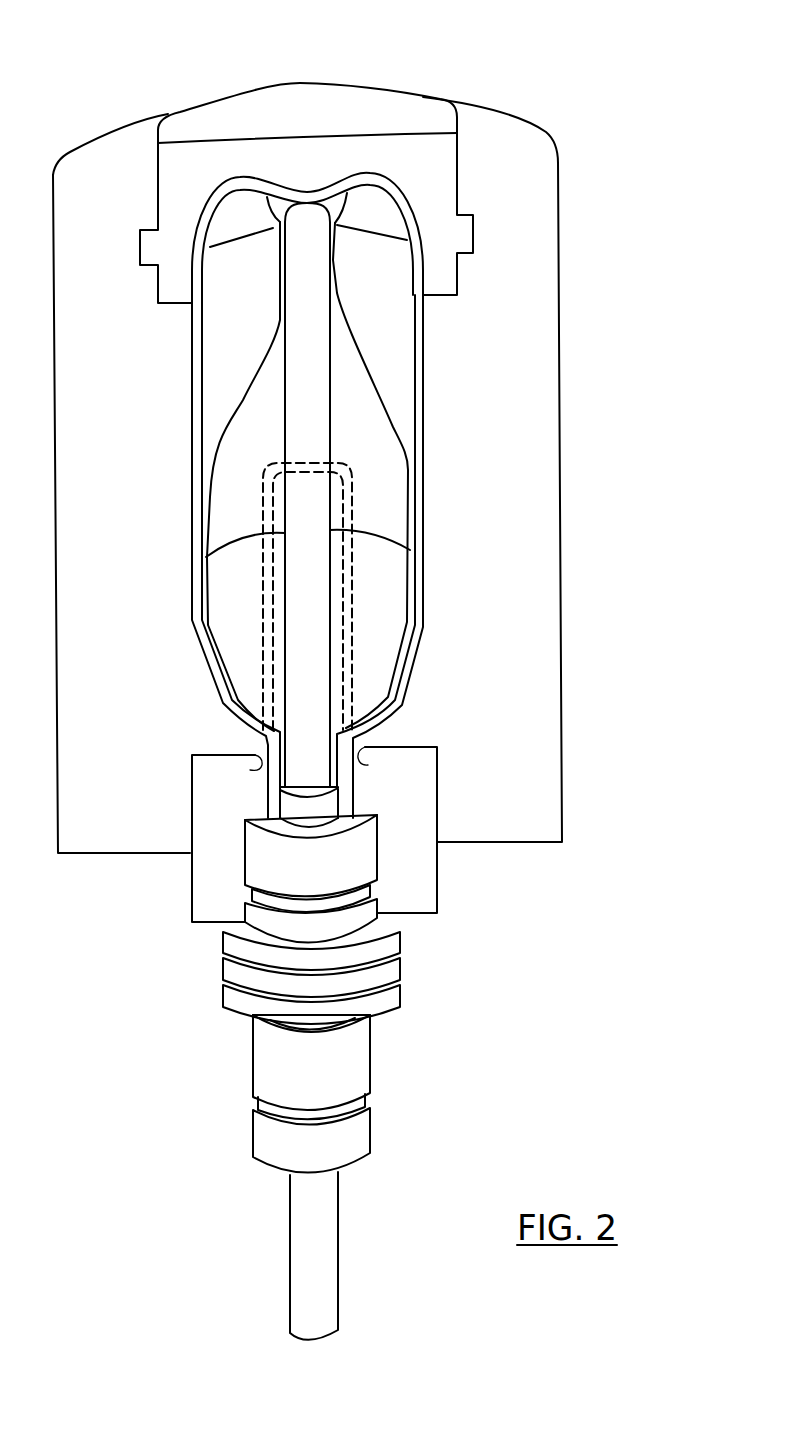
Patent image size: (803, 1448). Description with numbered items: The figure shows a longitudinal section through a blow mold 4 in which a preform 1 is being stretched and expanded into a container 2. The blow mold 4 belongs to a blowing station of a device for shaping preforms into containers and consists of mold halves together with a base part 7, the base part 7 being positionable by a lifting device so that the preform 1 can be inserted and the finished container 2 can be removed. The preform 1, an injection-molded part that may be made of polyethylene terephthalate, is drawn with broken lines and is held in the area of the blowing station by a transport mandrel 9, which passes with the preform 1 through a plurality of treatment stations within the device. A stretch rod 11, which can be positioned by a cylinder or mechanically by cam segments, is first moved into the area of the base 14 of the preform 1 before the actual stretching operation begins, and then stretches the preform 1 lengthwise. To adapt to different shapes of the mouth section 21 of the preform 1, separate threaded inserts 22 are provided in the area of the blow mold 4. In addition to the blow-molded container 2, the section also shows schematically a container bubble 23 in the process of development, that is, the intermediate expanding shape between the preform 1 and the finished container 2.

The preform 1 is at (350, 632).
The container 2 is at (421, 402).
The blow mold 4 is at (516, 466).
The base part 7 is at (393, 98).
The transport mandrel 9 is at (390, 983).
The stretch rod 11 is at (290, 1272).
The base 14 is at (343, 467).
The mouth section 21 is at (353, 778).
The threaded inserts 22 is at (437, 875).
The container bubble 23 is at (362, 360).